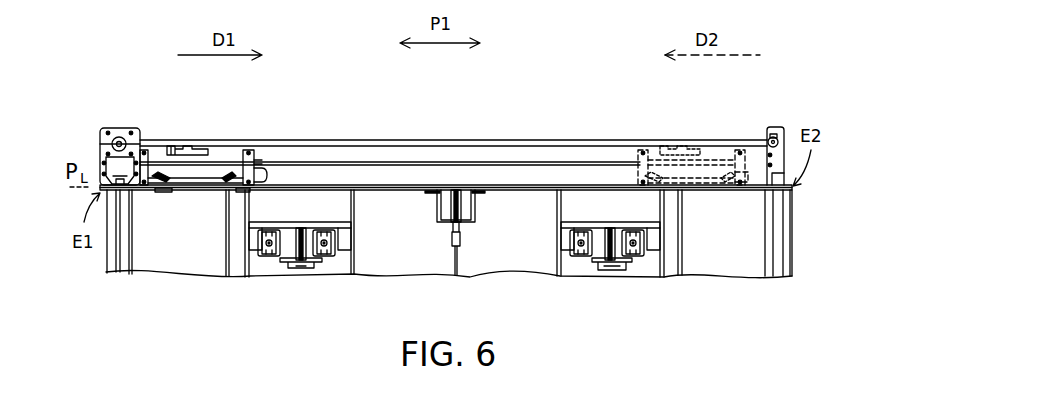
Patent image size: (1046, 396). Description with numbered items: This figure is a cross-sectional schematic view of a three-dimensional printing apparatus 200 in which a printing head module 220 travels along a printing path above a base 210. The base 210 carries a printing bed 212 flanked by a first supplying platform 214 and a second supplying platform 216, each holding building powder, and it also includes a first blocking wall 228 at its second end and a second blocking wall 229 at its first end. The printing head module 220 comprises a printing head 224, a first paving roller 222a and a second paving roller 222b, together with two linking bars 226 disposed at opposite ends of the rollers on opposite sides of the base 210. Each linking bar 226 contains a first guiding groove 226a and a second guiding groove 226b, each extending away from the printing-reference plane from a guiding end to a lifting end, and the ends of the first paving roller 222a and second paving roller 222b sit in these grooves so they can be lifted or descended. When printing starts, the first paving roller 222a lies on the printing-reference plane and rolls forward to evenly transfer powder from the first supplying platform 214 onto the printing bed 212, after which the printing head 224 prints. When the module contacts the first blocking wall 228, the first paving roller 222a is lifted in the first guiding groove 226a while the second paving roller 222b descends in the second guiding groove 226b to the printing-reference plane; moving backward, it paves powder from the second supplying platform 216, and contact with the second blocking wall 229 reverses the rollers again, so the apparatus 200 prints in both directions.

The 3-D printing apparatus 200 is at (790, 322).
The base 210 is at (786, 225).
The printing bed 212 is at (508, 184).
The first supplying platform 214 is at (322, 223).
The second supplying platform 216 is at (581, 220).
The printing head module 220 is at (174, 71).
The first paving roller 222a is at (243, 168).
The second paving roller 222b is at (162, 180).
The printing head 224 is at (205, 150).
The linking bar 226 is at (272, 175).
The first guiding groove 226a is at (242, 188).
The second guiding groove 226b is at (167, 188).
The first blocking wall 228 is at (776, 126).
The second blocking wall 229 is at (118, 128).